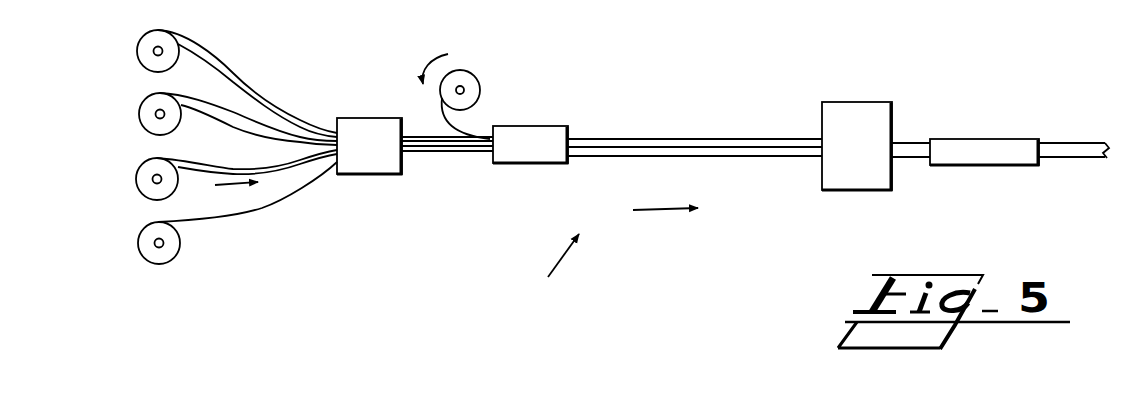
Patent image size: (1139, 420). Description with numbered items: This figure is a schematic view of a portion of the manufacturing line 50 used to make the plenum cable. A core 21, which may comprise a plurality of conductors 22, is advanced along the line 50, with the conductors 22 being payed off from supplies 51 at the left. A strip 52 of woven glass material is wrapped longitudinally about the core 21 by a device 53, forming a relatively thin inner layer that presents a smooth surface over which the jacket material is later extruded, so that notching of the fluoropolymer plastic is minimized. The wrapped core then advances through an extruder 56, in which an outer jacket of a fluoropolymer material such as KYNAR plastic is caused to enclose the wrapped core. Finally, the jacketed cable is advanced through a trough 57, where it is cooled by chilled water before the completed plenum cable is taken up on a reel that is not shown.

The core 21 is at (452, 148).
The conductors 22 is at (290, 193).
The line 50 is at (551, 270).
The supplies 51 is at (165, 254).
The strip of woven glass material 52 is at (462, 122).
The device 53 is at (557, 137).
The extruder 56 is at (868, 101).
The trough 57 is at (1004, 137).